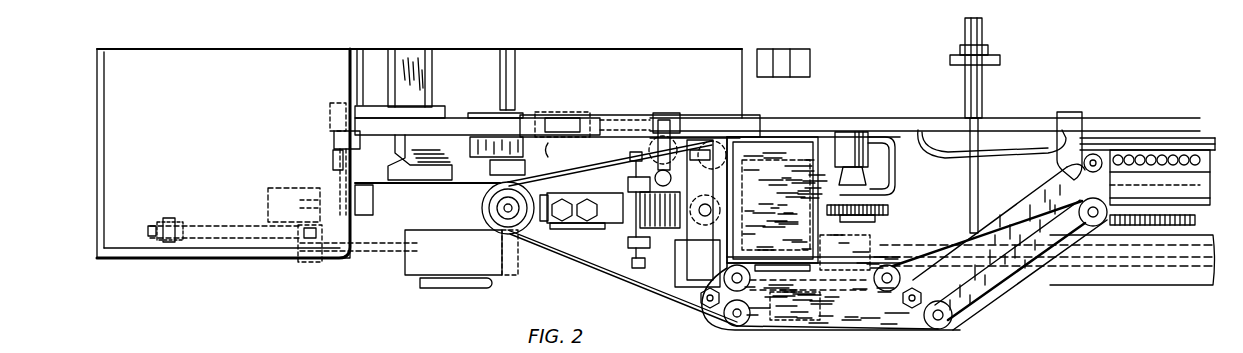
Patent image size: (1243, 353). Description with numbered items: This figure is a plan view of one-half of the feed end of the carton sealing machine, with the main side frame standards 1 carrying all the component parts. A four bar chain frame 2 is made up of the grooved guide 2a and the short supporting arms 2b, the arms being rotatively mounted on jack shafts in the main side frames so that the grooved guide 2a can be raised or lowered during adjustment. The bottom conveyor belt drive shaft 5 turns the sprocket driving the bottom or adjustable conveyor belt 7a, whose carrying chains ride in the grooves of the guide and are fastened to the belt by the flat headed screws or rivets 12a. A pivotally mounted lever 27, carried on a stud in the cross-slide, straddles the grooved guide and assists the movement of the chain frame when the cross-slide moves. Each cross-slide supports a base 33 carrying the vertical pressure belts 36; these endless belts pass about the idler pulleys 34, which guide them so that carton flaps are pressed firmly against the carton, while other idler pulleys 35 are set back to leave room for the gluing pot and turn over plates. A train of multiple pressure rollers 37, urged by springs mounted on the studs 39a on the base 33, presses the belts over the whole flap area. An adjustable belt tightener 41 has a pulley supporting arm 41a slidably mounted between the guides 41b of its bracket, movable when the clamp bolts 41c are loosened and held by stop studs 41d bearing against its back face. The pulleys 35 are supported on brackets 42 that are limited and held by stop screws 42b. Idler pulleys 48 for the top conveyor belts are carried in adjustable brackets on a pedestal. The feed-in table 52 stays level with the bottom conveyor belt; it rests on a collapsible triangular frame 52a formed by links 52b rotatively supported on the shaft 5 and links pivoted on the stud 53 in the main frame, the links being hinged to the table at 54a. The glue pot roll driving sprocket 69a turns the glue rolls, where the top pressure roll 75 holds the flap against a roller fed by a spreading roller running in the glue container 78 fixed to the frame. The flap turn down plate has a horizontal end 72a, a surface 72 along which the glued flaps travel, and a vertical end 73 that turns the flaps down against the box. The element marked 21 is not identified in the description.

The main side frame standards 1 is at (1163, 265).
The four bar chain frame 2 is at (532, 115).
The grooved guide 2a is at (632, 120).
The short supporting arms 2b is at (445, 124).
The bottom conveyor belt drive shaft 5 is at (358, 68).
The adjustable conveyor belt 7a is at (1147, 116).
The flat headed screws or rivets 12a is at (712, 207).
The carrier frame 21 is at (790, 322).
The pivotally mounted lever 27 is at (818, 118).
The bases 33 is at (1015, 287).
The idler pulleys 34 is at (1096, 200).
The idler pulleys 35 is at (490, 211).
The pressure belts 36 is at (655, 300).
The multiple pressure rollers 37 is at (1197, 150).
The studs 39a is at (1192, 98).
The adjustable belt tightener 41 is at (562, 200).
The pulley supporting arm 41a is at (545, 215).
The guides 41b is at (575, 230).
The clamp bolts 41c is at (592, 208).
The stop studs 41d is at (640, 262).
The brackets 42 is at (676, 198).
The stop screws 42b is at (632, 150).
The idler pulleys 48 is at (553, 159).
The feed-in table 52 is at (175, 60).
The collapsible triangular frame 52a is at (183, 220).
The links 52b is at (285, 219).
The stud 53 is at (302, 262).
The hinge 54a is at (166, 236).
The glue pot roll driving sprocket 69a is at (872, 216).
The surface of flap turn down plate 72 is at (990, 118).
The horizontal end of flap turn down plate 72a is at (938, 145).
The vertical end of flap turn down plate 73 is at (1062, 118).
The top pressure roll 75 is at (852, 150).
The glue container 78 is at (892, 160).